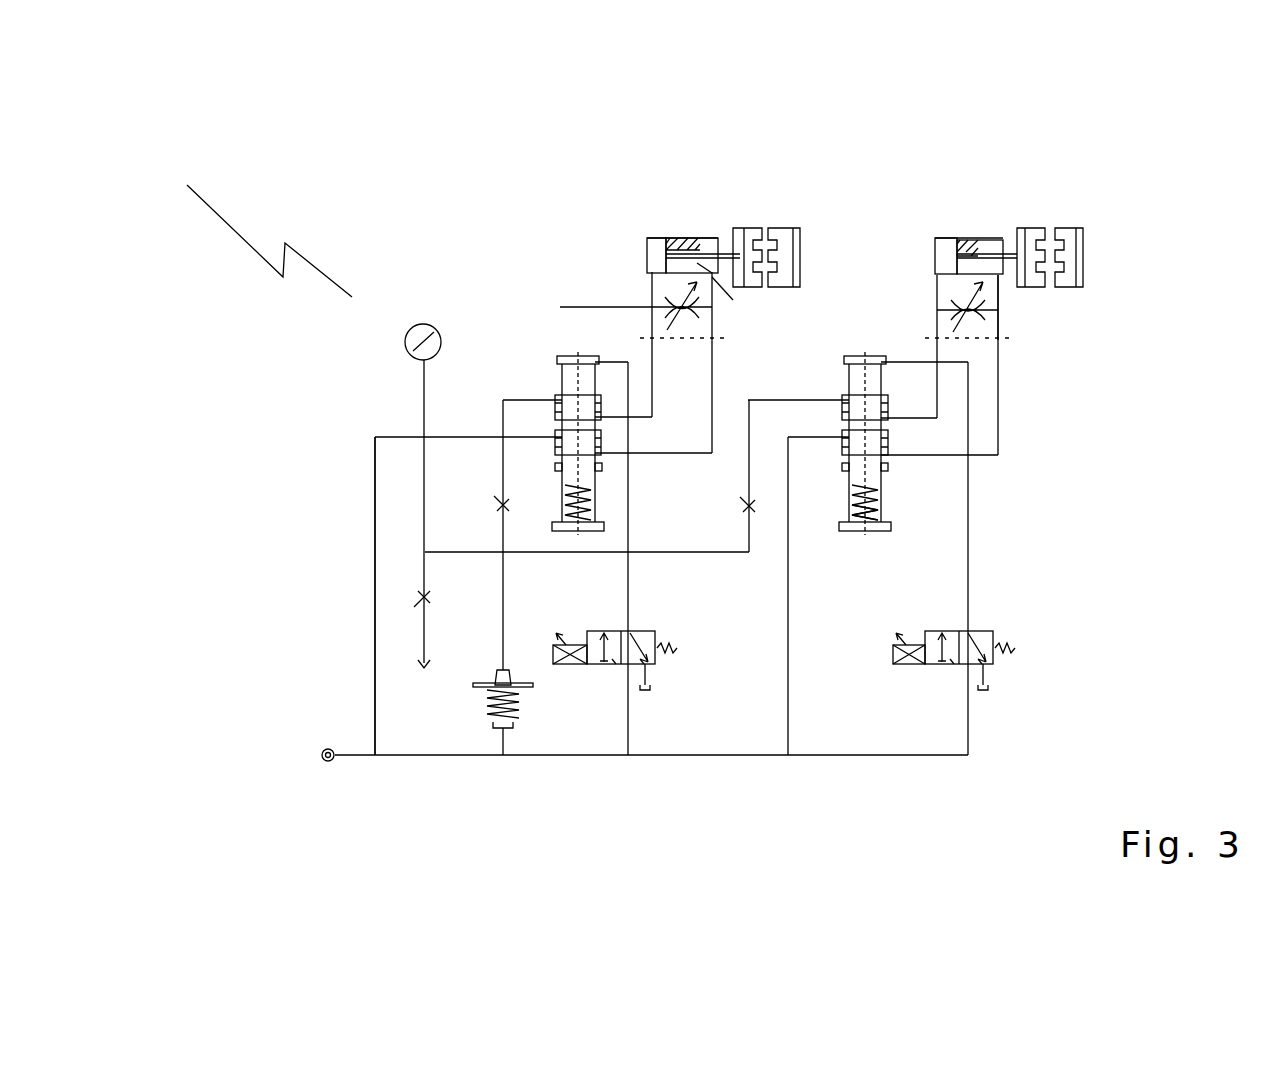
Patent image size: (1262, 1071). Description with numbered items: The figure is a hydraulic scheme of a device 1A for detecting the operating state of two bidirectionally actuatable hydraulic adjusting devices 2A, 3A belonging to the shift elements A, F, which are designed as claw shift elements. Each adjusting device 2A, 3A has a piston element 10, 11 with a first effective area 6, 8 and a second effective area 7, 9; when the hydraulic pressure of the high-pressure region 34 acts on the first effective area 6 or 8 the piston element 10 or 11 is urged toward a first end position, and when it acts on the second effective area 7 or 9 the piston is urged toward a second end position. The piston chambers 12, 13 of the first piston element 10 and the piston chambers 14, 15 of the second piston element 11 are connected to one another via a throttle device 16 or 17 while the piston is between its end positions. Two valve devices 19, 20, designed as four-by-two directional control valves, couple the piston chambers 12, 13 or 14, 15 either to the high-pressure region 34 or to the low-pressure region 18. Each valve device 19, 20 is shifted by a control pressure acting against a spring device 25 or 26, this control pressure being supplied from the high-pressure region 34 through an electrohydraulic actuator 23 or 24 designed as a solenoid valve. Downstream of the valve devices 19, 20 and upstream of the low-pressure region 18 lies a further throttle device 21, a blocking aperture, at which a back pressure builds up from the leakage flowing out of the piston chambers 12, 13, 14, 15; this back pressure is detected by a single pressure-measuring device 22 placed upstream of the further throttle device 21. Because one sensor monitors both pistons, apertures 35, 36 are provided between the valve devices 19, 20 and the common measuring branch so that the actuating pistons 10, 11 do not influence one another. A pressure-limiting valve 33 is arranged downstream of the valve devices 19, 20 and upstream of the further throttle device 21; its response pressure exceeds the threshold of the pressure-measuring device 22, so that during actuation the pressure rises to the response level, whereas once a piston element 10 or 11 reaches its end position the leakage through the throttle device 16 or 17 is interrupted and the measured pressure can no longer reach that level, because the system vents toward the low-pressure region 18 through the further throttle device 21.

The device for detecting an operating state 1A is at (267, 224).
The hydraulic adjusting device 2A is at (608, 213).
The hydraulic adjusting device 3A is at (933, 257).
The first effective area 6 is at (647, 255).
The second effective area 7 is at (712, 238).
The first effective area 8 is at (937, 238).
The second effective area 9 is at (997, 238).
The piston element 10 is at (667, 238).
The piston element 11 is at (1007, 292).
The piston chamber 12 is at (652, 238).
The piston chamber 13 is at (712, 277).
The piston chamber 14 is at (938, 245).
The piston chamber 15 is at (1015, 233).
The throttle device 16 is at (665, 307).
The throttle device 17 is at (1012, 320).
The low-pressure region 18 is at (423, 673).
The valve device 19 is at (538, 372).
The valve device 20 is at (913, 438).
The further throttle device 21 is at (417, 598).
The pressure-measuring device 22 is at (405, 338).
The electrohydraulic actuator 23 is at (647, 702).
The electrohydraulic actuator 24 is at (1005, 690).
The spring device 25 is at (563, 493).
The spring device 26 is at (880, 502).
The pressure-limiting valve 33 is at (503, 740).
The high-pressure region 34 is at (322, 753).
The aperture 35 is at (495, 507).
The aperture 36 is at (757, 513).
The shift element A is at (780, 212).
The shift element F is at (1097, 228).